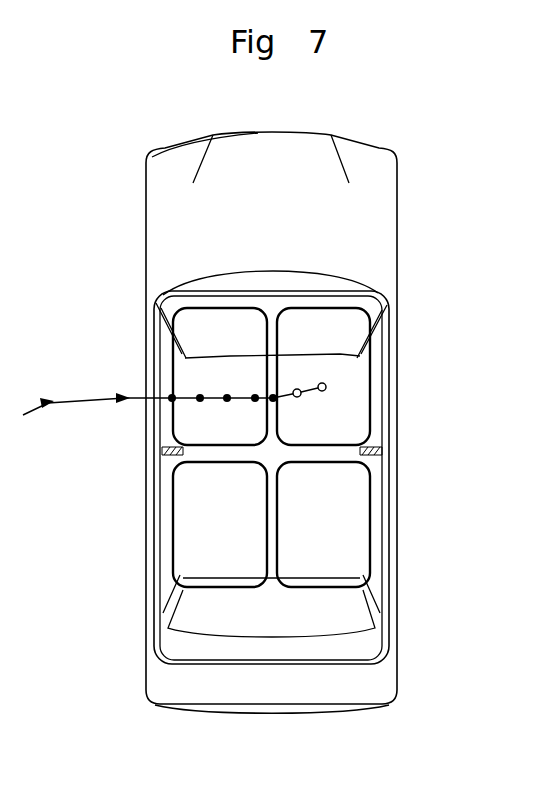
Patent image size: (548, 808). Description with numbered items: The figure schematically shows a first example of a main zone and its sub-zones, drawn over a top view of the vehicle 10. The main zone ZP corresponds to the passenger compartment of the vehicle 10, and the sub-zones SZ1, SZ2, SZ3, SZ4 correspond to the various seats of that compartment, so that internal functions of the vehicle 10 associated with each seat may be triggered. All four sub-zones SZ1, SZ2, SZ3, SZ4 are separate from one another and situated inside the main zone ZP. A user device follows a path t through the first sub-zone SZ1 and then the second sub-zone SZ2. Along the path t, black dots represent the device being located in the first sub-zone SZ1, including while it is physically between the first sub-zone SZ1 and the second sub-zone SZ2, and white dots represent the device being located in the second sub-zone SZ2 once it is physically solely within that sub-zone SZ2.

The vehicle 10 is at (246, 377).
The first sub-zone SZ1 is at (175, 324).
The second sub-zone SZ2 is at (370, 386).
The third sub-zone SZ3 is at (176, 471).
The fourth sub-zone SZ4 is at (370, 530).
The main zone ZP is at (163, 614).
The path t is at (174, 393).